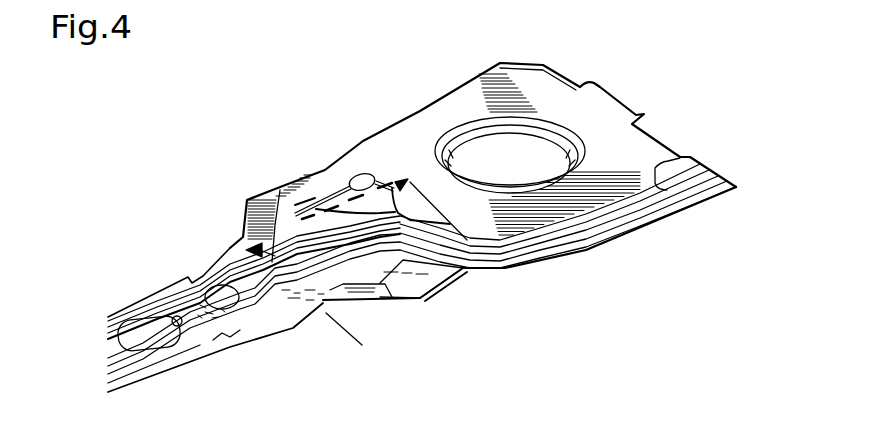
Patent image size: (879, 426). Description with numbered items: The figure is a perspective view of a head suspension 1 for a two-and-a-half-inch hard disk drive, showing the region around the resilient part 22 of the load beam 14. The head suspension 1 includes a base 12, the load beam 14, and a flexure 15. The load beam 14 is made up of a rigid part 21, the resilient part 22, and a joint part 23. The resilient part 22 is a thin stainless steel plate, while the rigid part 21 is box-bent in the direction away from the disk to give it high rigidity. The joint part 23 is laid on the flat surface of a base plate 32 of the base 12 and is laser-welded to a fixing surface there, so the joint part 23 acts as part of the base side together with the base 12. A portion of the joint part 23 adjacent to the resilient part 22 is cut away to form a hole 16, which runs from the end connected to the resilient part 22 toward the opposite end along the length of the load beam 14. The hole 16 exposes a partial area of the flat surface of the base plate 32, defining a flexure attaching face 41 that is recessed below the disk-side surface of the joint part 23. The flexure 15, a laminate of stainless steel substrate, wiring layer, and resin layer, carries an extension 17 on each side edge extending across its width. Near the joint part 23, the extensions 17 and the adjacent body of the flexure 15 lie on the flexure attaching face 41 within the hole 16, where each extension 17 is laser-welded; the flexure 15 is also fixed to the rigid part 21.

The head suspension 1 is at (237, 101).
The base 12 is at (385, 117).
The load beam 14 is at (221, 243).
The flexure 15 is at (606, 240).
The hole 16 is at (348, 183).
The extension 17 is at (310, 197).
The rigid part 21 is at (208, 342).
The resilient part 22 is at (343, 293).
The joint part 23 is at (423, 280).
The base plate 32 is at (458, 287).
The flexure attaching face 41 is at (318, 182).